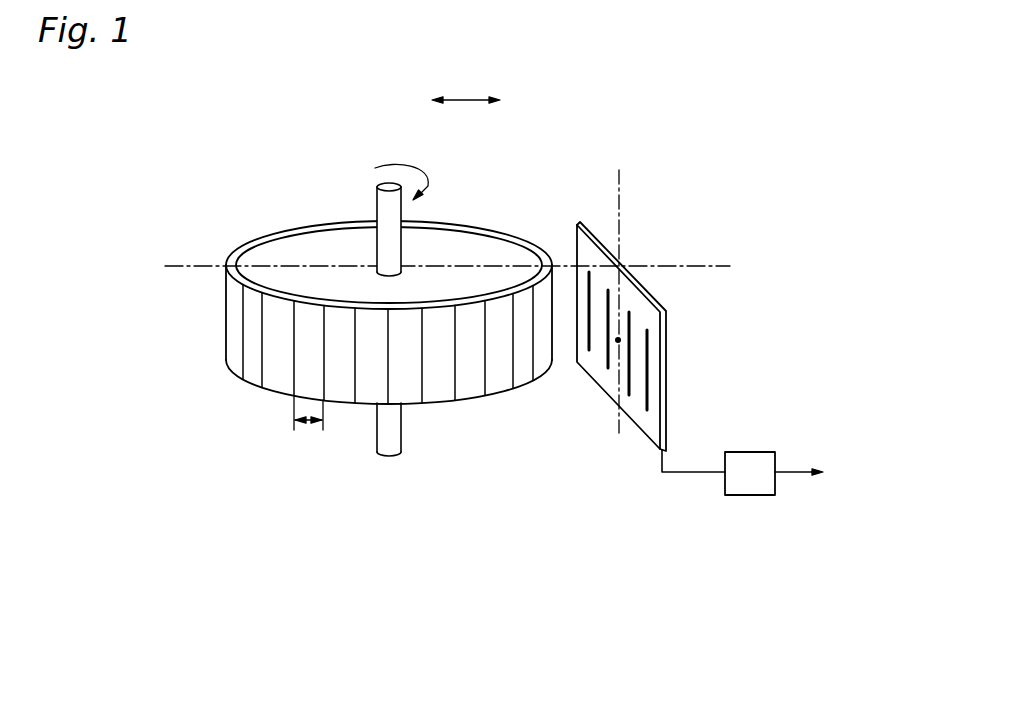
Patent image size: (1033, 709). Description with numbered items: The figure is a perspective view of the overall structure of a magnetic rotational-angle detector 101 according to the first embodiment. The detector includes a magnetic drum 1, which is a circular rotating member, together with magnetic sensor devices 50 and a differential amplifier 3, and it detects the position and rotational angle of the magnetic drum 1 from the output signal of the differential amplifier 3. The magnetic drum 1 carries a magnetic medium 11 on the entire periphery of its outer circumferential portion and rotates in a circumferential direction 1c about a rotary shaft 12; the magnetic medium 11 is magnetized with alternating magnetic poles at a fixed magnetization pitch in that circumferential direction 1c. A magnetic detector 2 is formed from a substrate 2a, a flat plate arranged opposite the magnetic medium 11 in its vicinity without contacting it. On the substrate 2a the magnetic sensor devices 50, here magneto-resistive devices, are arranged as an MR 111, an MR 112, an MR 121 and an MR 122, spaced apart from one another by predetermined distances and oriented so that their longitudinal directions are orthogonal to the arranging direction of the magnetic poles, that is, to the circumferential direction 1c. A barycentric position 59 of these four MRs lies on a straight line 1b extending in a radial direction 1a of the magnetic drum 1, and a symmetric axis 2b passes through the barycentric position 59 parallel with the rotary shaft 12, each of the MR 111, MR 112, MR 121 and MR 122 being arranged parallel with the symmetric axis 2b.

The magnetic rotational-angle detector 101 is at (661, 117).
The magnetic drum 1 is at (437, 237).
The radial direction 1a is at (466, 100).
The straight line 1b is at (199, 262).
The circumferential direction 1c is at (402, 167).
The magnetic medium 11 is at (523, 240).
The rotary shaft 12 is at (376, 199).
The magnetic detector 2 is at (608, 353).
The substrate 2a is at (668, 326).
The symmetric axis 2b is at (619, 210).
The differential amplifier 3 is at (763, 452).
The magnetic sensor device 50 is at (567, 418).
The barycentric position 59 is at (621, 341).
The MR MR111 is at (588, 352).
The MR MR112 is at (607, 369).
The MR MR121 is at (628, 397).
The MR MR122 is at (635, 444).